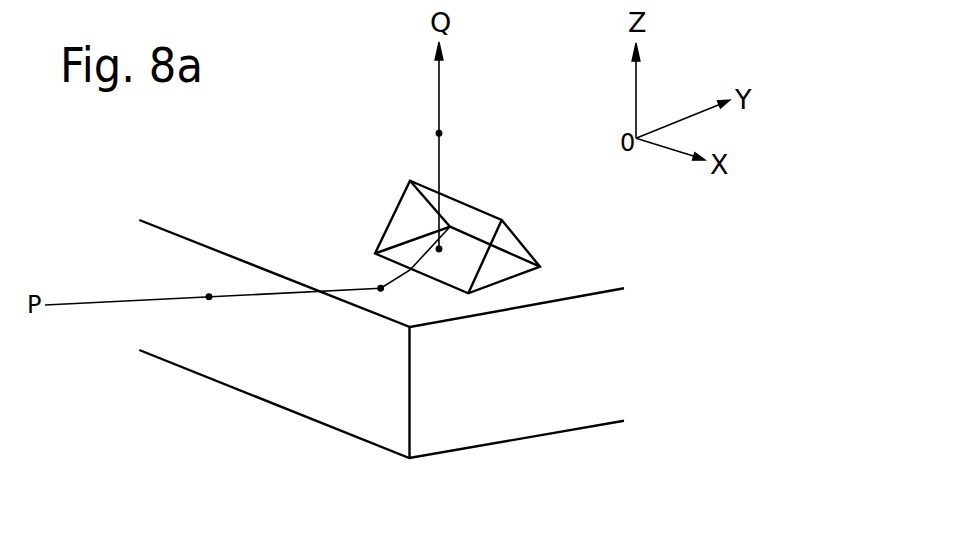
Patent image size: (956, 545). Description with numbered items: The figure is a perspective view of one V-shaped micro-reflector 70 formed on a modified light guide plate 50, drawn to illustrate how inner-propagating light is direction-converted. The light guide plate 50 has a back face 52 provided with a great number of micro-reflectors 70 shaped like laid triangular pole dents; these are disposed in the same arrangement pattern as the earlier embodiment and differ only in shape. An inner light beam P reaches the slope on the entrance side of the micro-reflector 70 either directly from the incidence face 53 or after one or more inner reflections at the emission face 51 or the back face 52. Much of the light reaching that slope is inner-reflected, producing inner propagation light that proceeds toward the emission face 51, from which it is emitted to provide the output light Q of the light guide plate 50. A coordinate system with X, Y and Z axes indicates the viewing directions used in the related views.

The light guide plate 50 is at (398, 304).
The emission face 51 is at (263, 198).
The back face 52 is at (438, 303).
The incidence face 53 is at (283, 392).
The micro-reflector 70 is at (537, 240).